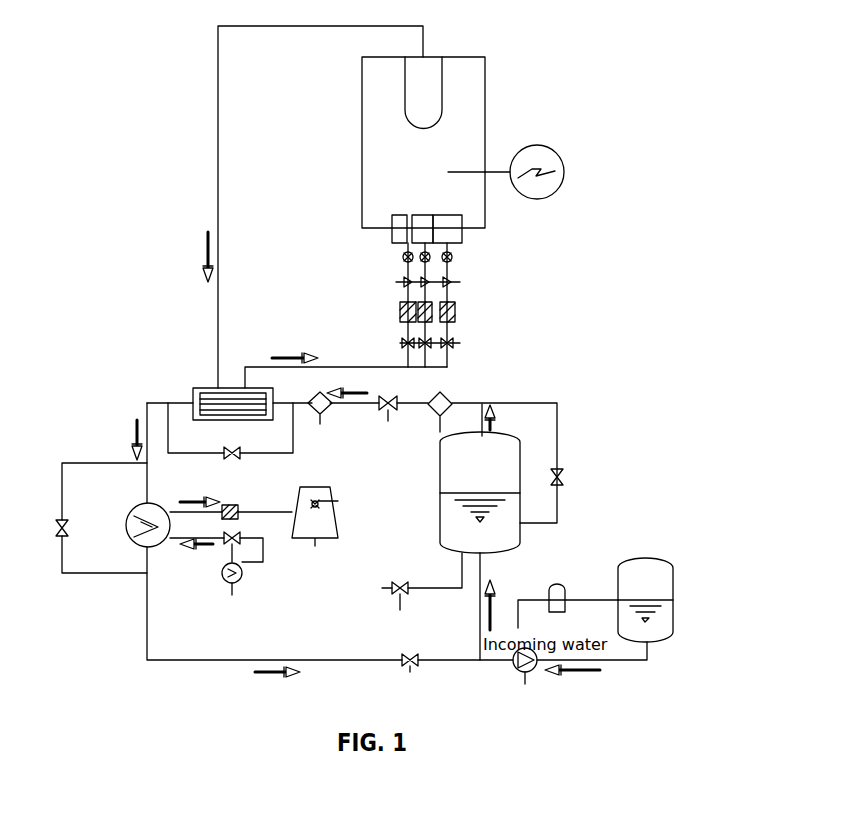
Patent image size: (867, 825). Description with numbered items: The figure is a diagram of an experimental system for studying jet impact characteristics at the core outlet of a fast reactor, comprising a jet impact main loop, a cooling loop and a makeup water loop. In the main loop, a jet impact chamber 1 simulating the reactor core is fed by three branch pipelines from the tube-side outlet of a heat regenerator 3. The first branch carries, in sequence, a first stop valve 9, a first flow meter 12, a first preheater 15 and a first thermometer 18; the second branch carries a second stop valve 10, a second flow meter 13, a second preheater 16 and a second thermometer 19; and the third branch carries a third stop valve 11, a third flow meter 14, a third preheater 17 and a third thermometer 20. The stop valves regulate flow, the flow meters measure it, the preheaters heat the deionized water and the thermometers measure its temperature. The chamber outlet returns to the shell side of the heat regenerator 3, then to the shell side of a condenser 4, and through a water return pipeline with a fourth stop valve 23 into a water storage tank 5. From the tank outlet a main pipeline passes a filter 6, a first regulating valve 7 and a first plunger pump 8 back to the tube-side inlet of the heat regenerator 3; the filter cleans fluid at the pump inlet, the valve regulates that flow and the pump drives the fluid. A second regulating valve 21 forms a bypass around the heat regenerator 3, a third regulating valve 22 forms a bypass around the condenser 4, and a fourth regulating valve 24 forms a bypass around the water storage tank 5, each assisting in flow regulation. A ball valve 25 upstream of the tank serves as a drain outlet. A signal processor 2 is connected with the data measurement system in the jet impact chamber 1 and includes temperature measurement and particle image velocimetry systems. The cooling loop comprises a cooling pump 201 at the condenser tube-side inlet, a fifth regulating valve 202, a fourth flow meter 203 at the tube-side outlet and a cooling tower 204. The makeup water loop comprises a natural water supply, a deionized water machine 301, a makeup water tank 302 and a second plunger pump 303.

The jet impact chamber 1 is at (486, 105).
The signal processor 2 is at (564, 172).
The heat regenerator 3 is at (233, 393).
The condenser 4 is at (126, 525).
The water storage tank 5 is at (440, 519).
The filter 6 is at (438, 421).
The first regulating valve 7 is at (388, 416).
The first plunger pump 8 is at (320, 416).
The first stop valve 9 is at (447, 337).
The second stop valve 10 is at (457, 343).
The third stop valve 11 is at (420, 343).
The first flow meter 12 is at (447, 305).
The second flow meter 13 is at (460, 312).
The third flow meter 14 is at (406, 312).
The first preheater 15 is at (447, 276).
The second preheater 16 is at (450, 282).
The third preheater 17 is at (420, 282).
The first thermometer 18 is at (447, 246).
The second thermometer 19 is at (456, 257).
The third thermometer 20 is at (391, 257).
The second regulating valve 21 is at (224, 452).
The third regulating valve 22 is at (56, 528).
The fourth stop valve 23 is at (410, 671).
The fourth regulating valve 24 is at (564, 477).
The ball valve 25 is at (400, 605).
The cooling pump 201 is at (232, 588).
The fifth regulating valve 202 is at (232, 547).
The fourth flow meter 203 is at (230, 505).
The cooling tower 204 is at (315, 526).
The deionized water machine 301 is at (567, 608).
The makeup water tank 302 is at (673, 588).
The second plunger pump 303 is at (523, 673).